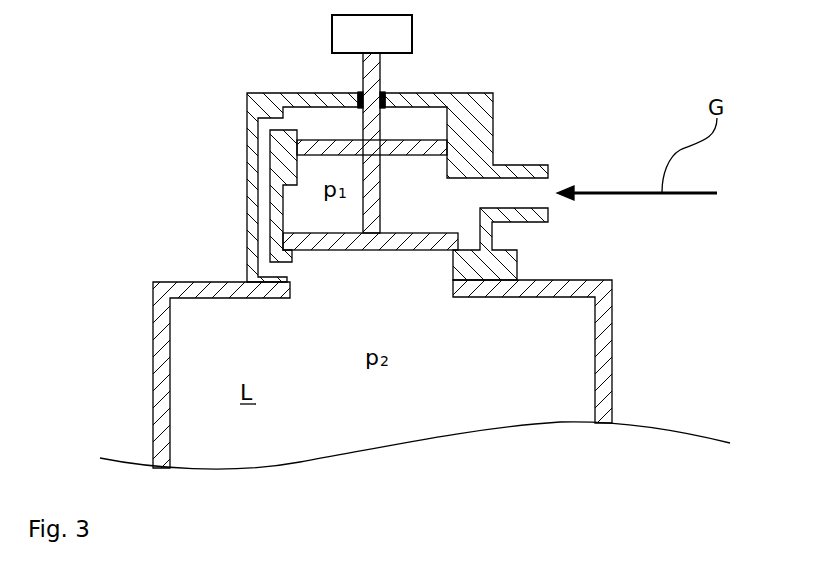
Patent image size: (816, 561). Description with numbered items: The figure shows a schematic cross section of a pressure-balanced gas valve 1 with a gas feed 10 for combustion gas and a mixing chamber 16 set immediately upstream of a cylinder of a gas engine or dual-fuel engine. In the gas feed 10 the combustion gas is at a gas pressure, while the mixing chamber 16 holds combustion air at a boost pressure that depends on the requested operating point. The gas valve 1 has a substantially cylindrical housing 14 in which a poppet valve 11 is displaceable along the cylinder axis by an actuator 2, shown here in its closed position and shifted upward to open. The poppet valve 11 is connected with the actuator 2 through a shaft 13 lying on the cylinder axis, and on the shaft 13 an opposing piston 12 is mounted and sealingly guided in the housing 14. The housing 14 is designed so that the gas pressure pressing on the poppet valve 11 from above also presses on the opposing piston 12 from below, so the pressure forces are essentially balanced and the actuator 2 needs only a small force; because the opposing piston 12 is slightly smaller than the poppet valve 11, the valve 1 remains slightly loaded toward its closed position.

The gas valve 1 is at (212, 85).
The actuator 2 is at (370, 37).
The gas feed 10 is at (537, 183).
The poppet valve 11 is at (348, 250).
The opposing piston 12 is at (403, 139).
The shaft 13 is at (368, 129).
The housing 14 is at (285, 157).
The mixing chamber 16 is at (526, 375).